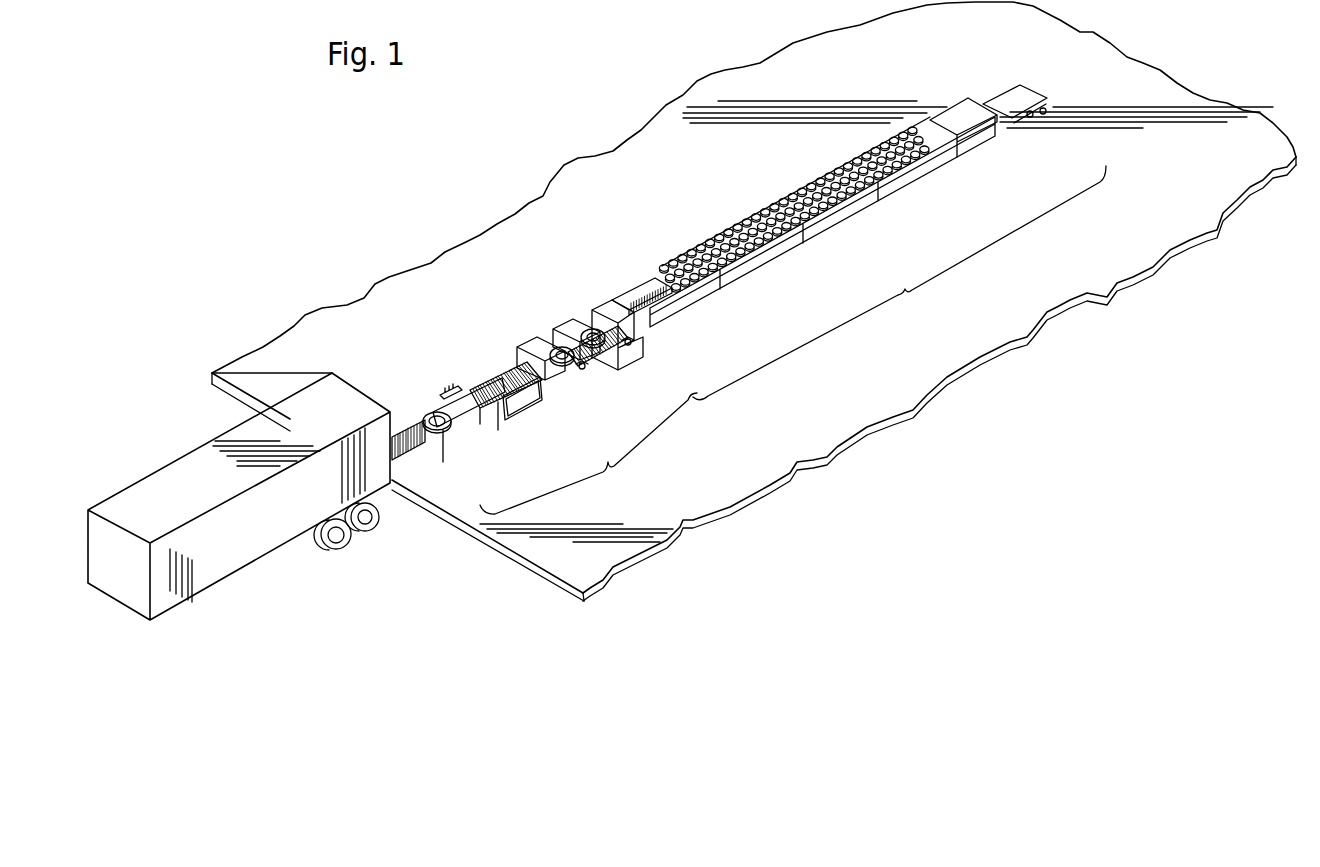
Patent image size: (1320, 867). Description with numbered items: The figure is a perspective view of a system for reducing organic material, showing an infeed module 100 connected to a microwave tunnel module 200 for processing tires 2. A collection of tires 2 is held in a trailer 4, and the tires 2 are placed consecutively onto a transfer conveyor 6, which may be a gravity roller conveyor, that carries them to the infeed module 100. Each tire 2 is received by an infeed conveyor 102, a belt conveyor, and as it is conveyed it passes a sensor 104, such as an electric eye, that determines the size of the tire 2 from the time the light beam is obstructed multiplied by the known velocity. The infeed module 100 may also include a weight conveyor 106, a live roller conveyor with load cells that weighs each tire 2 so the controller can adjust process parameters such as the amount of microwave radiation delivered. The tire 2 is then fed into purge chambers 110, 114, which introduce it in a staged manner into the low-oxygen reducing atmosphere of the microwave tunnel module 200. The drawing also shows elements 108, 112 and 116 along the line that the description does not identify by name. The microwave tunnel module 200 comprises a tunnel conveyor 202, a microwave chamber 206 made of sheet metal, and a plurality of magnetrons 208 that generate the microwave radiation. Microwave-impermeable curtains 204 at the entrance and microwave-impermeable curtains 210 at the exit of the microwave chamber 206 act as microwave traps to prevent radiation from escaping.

The tire 2 is at (431, 410).
The trailer 4 is at (205, 481).
The transfer conveyor 6 is at (408, 428).
The infeed module 100 is at (588, 453).
The infeed conveyor 102 is at (463, 416).
The sensor 104 is at (457, 391).
The weight conveyor 106 is at (494, 372).
The processing station 108 is at (536, 354).
The purge chamber 110 is at (548, 350).
The processing station 112 is at (571, 346).
The purge chamber 114 is at (586, 326).
The transfer unit 116 is at (602, 308).
The microwave tunnel module 200 is at (878, 205).
The tunnel conveyor 202 is at (1007, 100).
The microwave-impermeable curtains 204 is at (641, 282).
The microwave chamber 206 is at (770, 250).
The magnetrons 208 is at (760, 205).
The microwave-impermeable curtains 210 is at (960, 107).